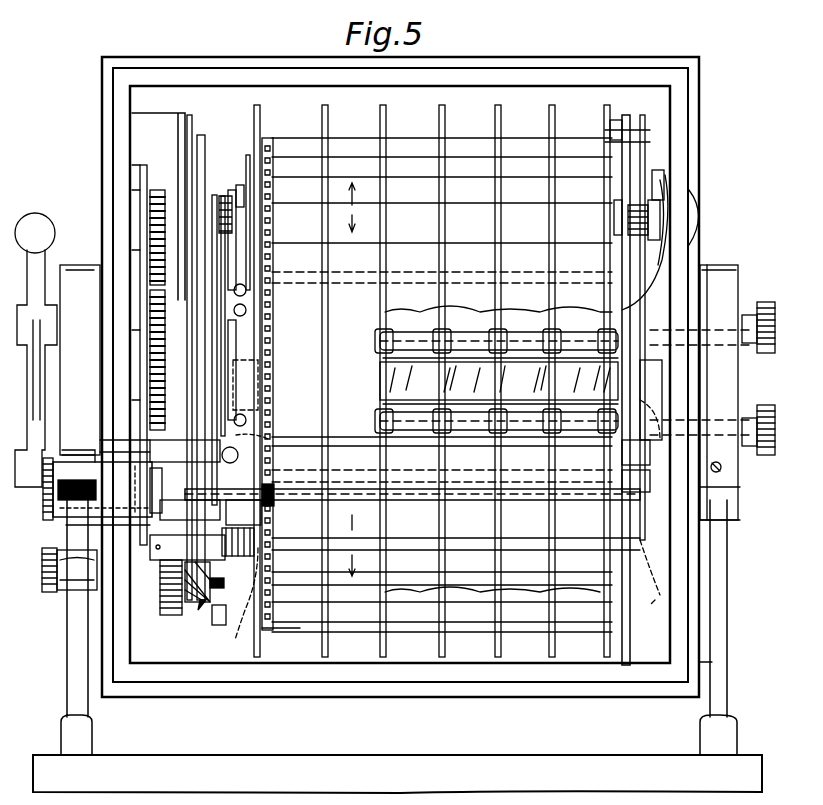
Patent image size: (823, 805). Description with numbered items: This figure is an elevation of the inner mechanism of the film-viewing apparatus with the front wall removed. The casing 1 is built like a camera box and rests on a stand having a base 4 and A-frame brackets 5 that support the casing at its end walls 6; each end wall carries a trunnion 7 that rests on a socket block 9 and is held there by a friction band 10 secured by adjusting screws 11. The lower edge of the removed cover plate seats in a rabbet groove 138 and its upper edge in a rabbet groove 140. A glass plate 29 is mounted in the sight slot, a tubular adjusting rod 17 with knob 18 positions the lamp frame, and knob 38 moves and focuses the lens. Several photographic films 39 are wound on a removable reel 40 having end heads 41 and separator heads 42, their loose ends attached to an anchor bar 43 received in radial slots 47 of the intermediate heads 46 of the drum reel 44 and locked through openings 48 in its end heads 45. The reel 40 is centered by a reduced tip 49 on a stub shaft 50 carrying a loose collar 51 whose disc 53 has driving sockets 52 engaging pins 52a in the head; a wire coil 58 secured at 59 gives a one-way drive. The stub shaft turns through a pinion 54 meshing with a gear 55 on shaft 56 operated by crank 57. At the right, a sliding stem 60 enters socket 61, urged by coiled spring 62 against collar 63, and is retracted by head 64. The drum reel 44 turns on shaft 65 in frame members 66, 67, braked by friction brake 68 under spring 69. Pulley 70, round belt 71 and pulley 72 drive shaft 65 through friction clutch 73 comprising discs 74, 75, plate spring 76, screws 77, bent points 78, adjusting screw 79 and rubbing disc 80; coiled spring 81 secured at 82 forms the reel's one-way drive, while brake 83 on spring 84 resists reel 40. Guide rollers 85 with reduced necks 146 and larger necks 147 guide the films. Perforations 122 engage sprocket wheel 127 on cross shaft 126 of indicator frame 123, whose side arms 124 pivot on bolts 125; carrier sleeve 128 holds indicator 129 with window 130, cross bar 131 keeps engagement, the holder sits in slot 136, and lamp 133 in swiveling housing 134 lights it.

The casing 1 is at (700, 660).
The base 4 is at (640, 740).
The end brackets or frame members 5 is at (88, 705).
The end walls 6 is at (102, 97).
The trunnions 7 is at (60, 275).
The block 9 is at (720, 490).
The friction band 10 is at (720, 265).
The adjusting screws 11 is at (722, 470).
The tubular adjusting rod 17 is at (495, 480).
The knob 18 is at (768, 450).
The glass plate 29 is at (420, 378).
The knob 38 is at (764, 302).
The photographic films 39 is at (358, 135).
The removable reel 40 is at (446, 113).
The end heads 41 is at (254, 115).
The intermediate separator heads 42 is at (548, 127).
The anchor bar 43 is at (470, 572).
The drum reel 44 is at (625, 622).
The end heads 45 is at (253, 650).
The intermediate heads 46 is at (380, 640).
The radial slots 47 is at (495, 580).
The openings 48 is at (440, 590).
The reduced tip 49 is at (275, 218).
The stub shaft 50 is at (230, 235).
The loose collar 51 is at (240, 236).
The driving sockets 52 is at (275, 166).
The pins 52a is at (250, 186).
The disc 53 is at (246, 160).
The pinion 54 is at (160, 190).
The gear 55 is at (150, 365).
The shaft 56 is at (103, 355).
The crank 57 is at (35, 380).
The wire coil 58 is at (230, 235).
The coil securing point 59 is at (275, 192).
The sliding stem 60 is at (645, 235).
The socket 61 is at (614, 218).
The coiled spring 62 is at (632, 200).
The collar 63 is at (614, 200).
The head 64 is at (700, 210).
The shaft 65 is at (240, 590).
The frame member 66 is at (258, 384).
The frame member 67 is at (662, 372).
The friction brake 68 is at (622, 470).
The spring 69 is at (660, 392).
The pulley 70 is at (204, 135).
The round belt 71 is at (190, 113).
The belt pulley 72 is at (180, 628).
The friction clutch 73 is at (150, 510).
The disc 74 is at (160, 596).
The driving disc 75 is at (66, 535).
The plate spring 76 is at (190, 605).
The screws 77 is at (209, 593).
The laterally bent points 78 is at (236, 450).
The adjusting screw 79 is at (187, 547).
The rubbing disc 80 is at (185, 610).
The coiled spring 81 is at (238, 528).
The spring securing point 82 is at (274, 522).
The brake 83 is at (591, 269).
The spring 84 is at (622, 292).
The guide rollers 85 is at (518, 332).
The perforations 122 is at (272, 628).
The indicator frame 123 is at (690, 360).
The side arms 124 is at (630, 158).
The pivot bolts 125 is at (185, 118).
The cross shaft 126 is at (458, 494).
The sprocket wheel 127 is at (276, 482).
The indicator carrier sleeve 128 is at (274, 442).
The indicator 129 is at (48, 515).
The window 130 is at (102, 489).
The cross bar 131 is at (386, 490).
The electric lamp 133 is at (75, 595).
The swiveling tubular housing 134 is at (57, 590).
The slot 136 is at (65, 452).
The rabbet groove 138 is at (545, 690).
The rabbet groove 140 is at (607, 70).
The reduced necks 146 is at (422, 332).
The necks 147 is at (455, 329).